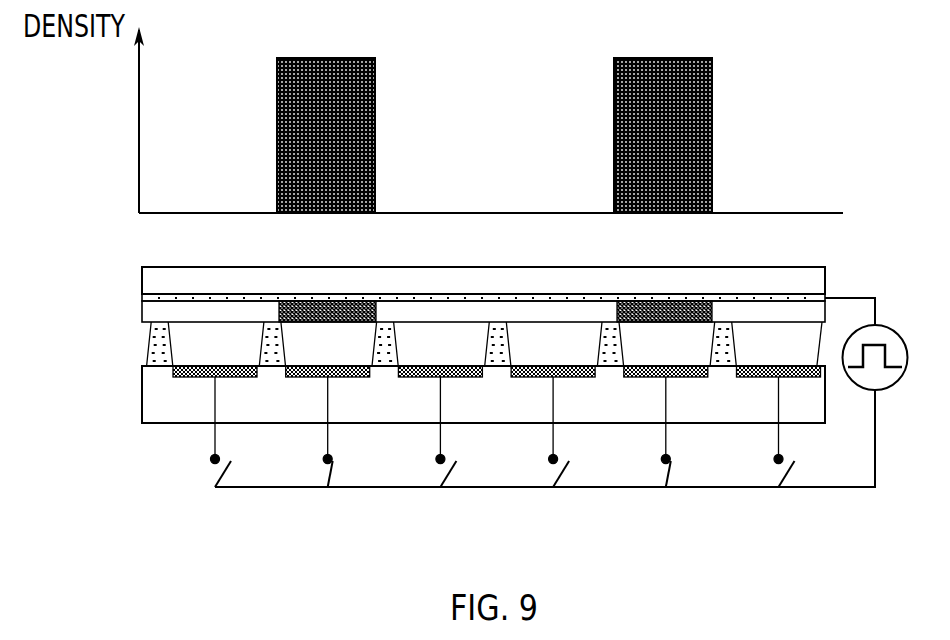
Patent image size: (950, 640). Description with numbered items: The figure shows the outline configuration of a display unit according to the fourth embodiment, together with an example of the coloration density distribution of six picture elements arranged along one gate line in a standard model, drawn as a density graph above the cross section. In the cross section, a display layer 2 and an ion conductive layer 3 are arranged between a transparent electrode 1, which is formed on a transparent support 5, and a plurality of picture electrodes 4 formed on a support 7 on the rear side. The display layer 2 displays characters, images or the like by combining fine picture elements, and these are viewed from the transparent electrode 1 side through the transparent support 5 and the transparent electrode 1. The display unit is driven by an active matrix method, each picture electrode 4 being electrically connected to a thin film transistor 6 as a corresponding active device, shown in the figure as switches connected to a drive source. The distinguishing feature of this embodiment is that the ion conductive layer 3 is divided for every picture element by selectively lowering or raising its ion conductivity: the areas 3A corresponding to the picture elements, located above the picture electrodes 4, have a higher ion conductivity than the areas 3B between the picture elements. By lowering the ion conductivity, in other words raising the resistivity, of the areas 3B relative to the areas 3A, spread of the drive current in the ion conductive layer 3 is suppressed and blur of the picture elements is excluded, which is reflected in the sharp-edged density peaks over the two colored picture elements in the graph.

The transparent electrode 1 is at (150, 295).
The display layer 2 is at (150, 313).
The ion conductive layer 3 is at (150, 340).
The areas corresponding to the picture elements 3A is at (312, 331).
The areas between the picture elements 3B is at (388, 349).
The picture electrodes 4 is at (173, 371).
The transparent support 5 is at (150, 278).
The thin film transistor 6 is at (213, 473).
The support 7 is at (150, 410).